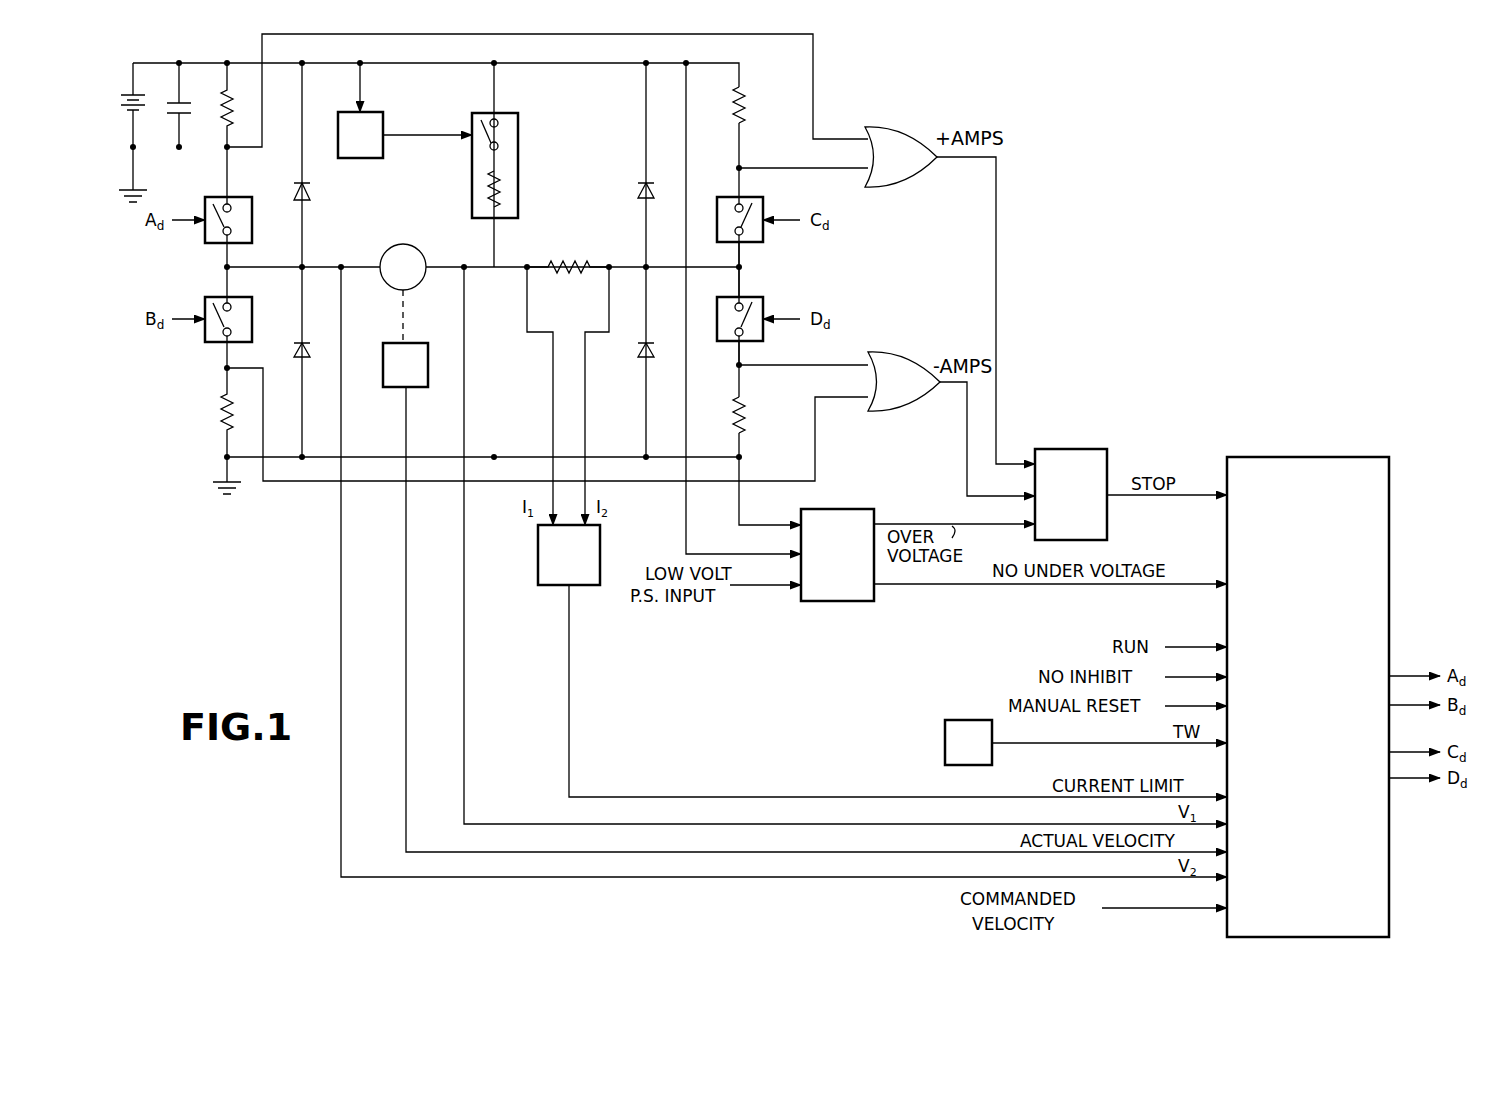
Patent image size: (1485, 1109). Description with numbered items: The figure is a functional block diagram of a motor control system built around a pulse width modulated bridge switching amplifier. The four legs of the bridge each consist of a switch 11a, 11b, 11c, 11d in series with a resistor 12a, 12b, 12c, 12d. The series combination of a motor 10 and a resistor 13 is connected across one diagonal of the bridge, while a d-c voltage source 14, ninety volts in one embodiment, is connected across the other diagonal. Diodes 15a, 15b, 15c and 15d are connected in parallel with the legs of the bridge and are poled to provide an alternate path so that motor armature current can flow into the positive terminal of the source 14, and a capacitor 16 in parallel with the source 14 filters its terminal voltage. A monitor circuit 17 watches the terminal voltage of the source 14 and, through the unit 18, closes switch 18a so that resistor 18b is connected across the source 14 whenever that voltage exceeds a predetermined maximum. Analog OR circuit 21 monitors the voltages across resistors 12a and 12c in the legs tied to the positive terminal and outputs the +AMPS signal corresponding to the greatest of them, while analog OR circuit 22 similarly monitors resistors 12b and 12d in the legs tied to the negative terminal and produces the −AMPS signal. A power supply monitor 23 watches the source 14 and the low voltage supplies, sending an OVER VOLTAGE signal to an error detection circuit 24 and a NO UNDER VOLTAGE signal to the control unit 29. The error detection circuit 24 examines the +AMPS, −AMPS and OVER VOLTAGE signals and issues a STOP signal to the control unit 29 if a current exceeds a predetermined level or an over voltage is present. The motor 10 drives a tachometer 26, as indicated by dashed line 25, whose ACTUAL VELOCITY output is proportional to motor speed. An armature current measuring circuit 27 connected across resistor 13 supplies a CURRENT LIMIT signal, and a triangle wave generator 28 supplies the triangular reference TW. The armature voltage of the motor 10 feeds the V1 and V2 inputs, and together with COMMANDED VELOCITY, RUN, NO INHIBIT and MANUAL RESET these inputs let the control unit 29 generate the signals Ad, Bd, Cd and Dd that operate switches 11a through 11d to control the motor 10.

The motor 10 is at (408, 244).
The switch 11a is at (256, 200).
The switch 11b is at (264, 306).
The switch 11c is at (766, 202).
The switch 11d is at (768, 299).
The resistor 12a is at (207, 130).
The resistor 12b is at (222, 410).
The resistor 12c is at (751, 100).
The resistor 12d is at (751, 410).
The resistor 13 is at (566, 257).
The d-c voltage source 14 is at (124, 76).
The diode 15a is at (328, 191).
The diode 15b is at (290, 342).
The diode 15c is at (630, 182).
The diode 15d is at (636, 348).
The capacitor 16 is at (162, 106).
The monitor circuit 17 is at (388, 113).
The switch and resistor unit 18 is at (518, 147).
The switch 18a is at (512, 137).
The resistor 18b is at (512, 184).
The analog OR circuit 21 is at (898, 124).
The analog OR circuit 22 is at (898, 353).
The power supply monitor 23 is at (850, 511).
The error detection circuit 24 is at (1088, 444).
The dashed line 25 is at (399, 312).
The tachometer 26 is at (379, 356).
The armature current measuring circuit 27 is at (538, 554).
The triangle wave generator 28 is at (956, 718).
The control unit 29 is at (1292, 456).